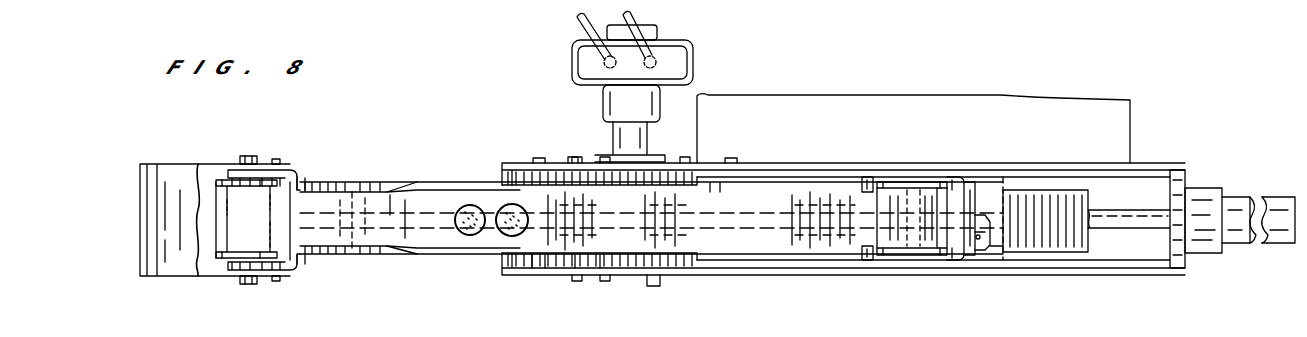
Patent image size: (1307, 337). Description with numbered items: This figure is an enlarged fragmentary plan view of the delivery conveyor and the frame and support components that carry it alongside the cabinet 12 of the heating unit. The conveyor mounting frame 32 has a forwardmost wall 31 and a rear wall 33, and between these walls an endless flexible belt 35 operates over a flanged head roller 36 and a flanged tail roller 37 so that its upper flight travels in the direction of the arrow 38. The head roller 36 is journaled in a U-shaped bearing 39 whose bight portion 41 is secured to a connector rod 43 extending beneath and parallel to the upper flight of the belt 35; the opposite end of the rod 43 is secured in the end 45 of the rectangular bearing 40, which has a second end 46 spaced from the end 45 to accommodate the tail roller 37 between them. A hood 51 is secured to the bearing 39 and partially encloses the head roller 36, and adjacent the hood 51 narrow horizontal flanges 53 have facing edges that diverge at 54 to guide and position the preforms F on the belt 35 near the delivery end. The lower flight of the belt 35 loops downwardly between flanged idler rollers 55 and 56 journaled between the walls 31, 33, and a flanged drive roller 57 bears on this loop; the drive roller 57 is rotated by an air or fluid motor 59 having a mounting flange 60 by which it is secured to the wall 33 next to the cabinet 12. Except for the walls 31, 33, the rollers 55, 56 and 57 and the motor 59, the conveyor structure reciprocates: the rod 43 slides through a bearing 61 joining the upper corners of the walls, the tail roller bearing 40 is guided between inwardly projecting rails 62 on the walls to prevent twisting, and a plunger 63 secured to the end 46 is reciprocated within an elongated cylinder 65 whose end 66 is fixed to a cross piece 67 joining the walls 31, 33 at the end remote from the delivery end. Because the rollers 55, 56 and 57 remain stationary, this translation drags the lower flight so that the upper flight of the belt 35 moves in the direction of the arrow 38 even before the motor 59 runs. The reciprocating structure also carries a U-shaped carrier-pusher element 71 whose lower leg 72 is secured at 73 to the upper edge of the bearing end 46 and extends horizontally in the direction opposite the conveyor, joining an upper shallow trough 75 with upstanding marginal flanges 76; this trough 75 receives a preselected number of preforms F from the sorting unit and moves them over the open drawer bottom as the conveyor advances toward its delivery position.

The cabinet 12 is at (1118, 124).
The forwardmost wall 31 is at (502, 273).
The conveyor mounting frame 32 is at (795, 286).
The rear wall 33 is at (808, 165).
The flexible belt 35 is at (422, 184).
The head roller 36 is at (228, 172).
The tail roller 37 is at (946, 182).
The arrow 38 is at (710, 242).
The bearing 39 is at (286, 168).
The bearing 40 is at (887, 182).
The bight portion 41 is at (300, 180).
The connector rod 43 is at (432, 256).
The end 45 is at (862, 262).
The end 46 is at (980, 176).
The hood 51 is at (170, 166).
The horizontal flanges 53 is at (345, 193).
The diverging edges 54 is at (407, 190).
The idler roller 55 is at (532, 262).
The idler roller 56 is at (720, 193).
The drive roller 57 is at (590, 270).
The drive motor 59 is at (572, 68).
The mounting flange 60 is at (600, 160).
The bearing 61 is at (550, 266).
The rails 62 is at (1098, 258).
The plunger 63 is at (1147, 212).
The cylinder 65 is at (1272, 246).
The cylinder end 66 is at (1210, 256).
The cross piece 67 is at (1170, 258).
The carrier-pusher element 71 is at (1019, 266).
The lower leg 72 is at (978, 252).
The securing point 73 is at (965, 250).
The trough 75 is at (1058, 197).
The marginal flanges 76 is at (1022, 186).
The preforms F is at (512, 204).